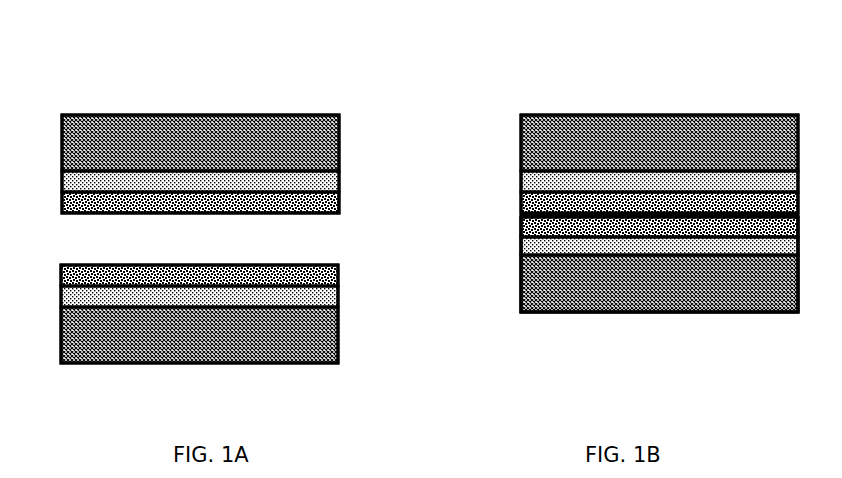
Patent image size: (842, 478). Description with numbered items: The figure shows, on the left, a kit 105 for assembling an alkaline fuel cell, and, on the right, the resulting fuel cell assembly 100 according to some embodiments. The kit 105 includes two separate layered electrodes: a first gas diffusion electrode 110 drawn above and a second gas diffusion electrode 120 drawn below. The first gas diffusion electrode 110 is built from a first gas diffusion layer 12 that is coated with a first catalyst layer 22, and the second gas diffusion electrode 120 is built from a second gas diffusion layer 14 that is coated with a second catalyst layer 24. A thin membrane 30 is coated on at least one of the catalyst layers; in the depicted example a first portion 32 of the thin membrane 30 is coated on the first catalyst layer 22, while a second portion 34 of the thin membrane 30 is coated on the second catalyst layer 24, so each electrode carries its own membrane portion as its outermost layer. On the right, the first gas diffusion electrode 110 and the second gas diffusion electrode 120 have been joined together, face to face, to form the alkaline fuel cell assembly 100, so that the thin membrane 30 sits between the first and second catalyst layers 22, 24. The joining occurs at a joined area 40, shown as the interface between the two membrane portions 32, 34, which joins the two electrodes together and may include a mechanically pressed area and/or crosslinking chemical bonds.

In FIG. 1B, the fuel cell assembly 100 is at (493, 75).
In FIG. 1A, the kit 105 is at (209, 91).
In FIG. 1A, the first gas diffusion electrode 110 is at (113, 101).
In FIG. 1A, the second gas diffusion electrode 120 is at (113, 385).
In FIG. 1A, the first gas diffusion layer 12 is at (339, 159).
In FIG. 1B, the first gas diffusion layer 12 is at (521, 144).
In FIG. 1A, the first catalyst layer 22 is at (339, 183).
In FIG. 1B, the first catalyst layer 22 is at (521, 174).
In FIG. 1A, the first portion of thin membrane 32 is at (339, 205).
In FIG. 1B, the first portion of thin membrane 32 is at (521, 202).
In FIG. 1B, the joined area 40 is at (521, 214).
In FIG. 1B, the thin membrane 30 is at (521, 223).
In FIG. 1A, the second portion of thin membrane 34 is at (338, 267).
In FIG. 1B, the second portion of thin membrane 34 is at (521, 228).
In FIG. 1A, the second catalyst layer 24 is at (338, 293).
In FIG. 1B, the second catalyst layer 24 is at (521, 252).
In FIG. 1A, the second gas diffusion layer 14 is at (338, 345).
In FIG. 1B, the second gas diffusion layer 14 is at (521, 298).